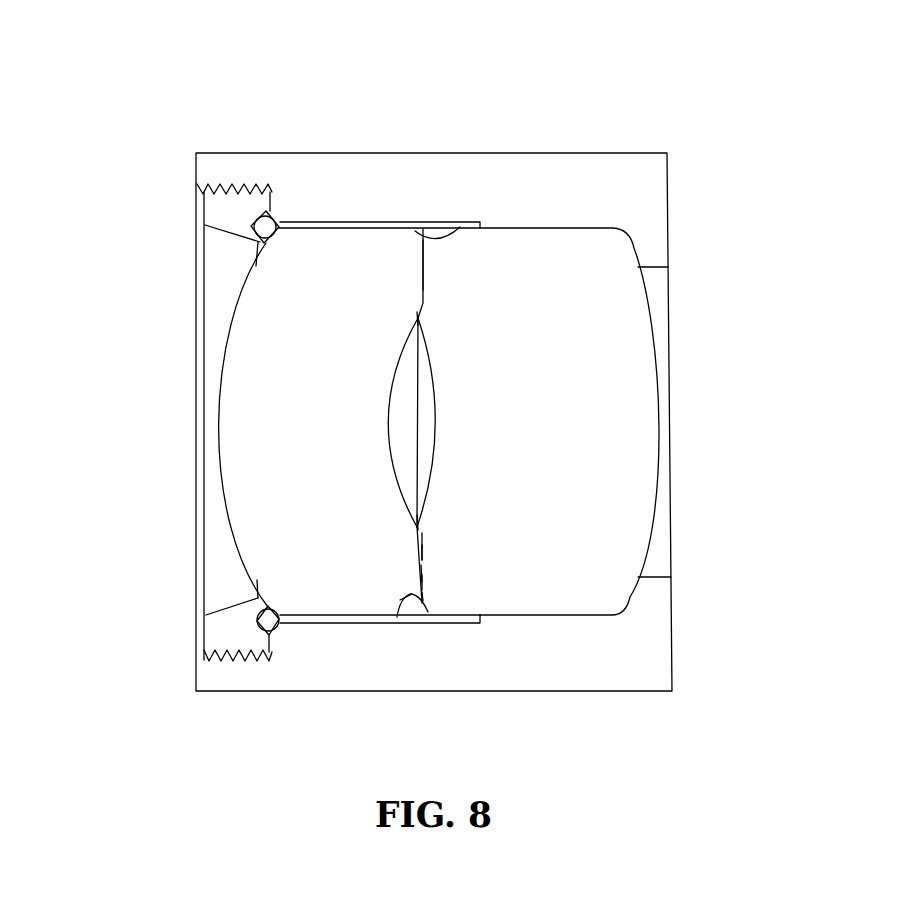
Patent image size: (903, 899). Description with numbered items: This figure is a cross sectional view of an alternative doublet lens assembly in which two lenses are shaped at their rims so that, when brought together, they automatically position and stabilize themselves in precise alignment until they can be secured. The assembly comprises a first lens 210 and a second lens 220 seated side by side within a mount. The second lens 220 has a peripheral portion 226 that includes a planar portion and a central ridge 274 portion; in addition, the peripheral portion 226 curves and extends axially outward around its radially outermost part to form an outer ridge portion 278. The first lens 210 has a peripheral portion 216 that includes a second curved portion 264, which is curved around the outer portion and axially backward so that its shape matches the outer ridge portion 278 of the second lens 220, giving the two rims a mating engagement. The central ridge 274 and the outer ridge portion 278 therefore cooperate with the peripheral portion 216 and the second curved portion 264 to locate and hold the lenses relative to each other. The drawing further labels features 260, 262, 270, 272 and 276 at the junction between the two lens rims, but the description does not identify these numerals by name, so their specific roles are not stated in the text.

The first lens element 210 is at (337, 265).
The second lens 220 is at (542, 268).
The peripheral portion of the first lens 216 is at (422, 574).
The peripheral portion 226 is at (423, 553).
The lower surface of first lens 260 is at (423, 553).
The upper surface of first lens 262 is at (422, 541).
The second curved portion 264 is at (408, 597).
The bonding interface 270 is at (423, 582).
The gap 272 is at (424, 270).
The central ridge portion 274 is at (460, 227).
The contact surface 276 is at (417, 325).
The outer ridge portion 278 is at (423, 601).